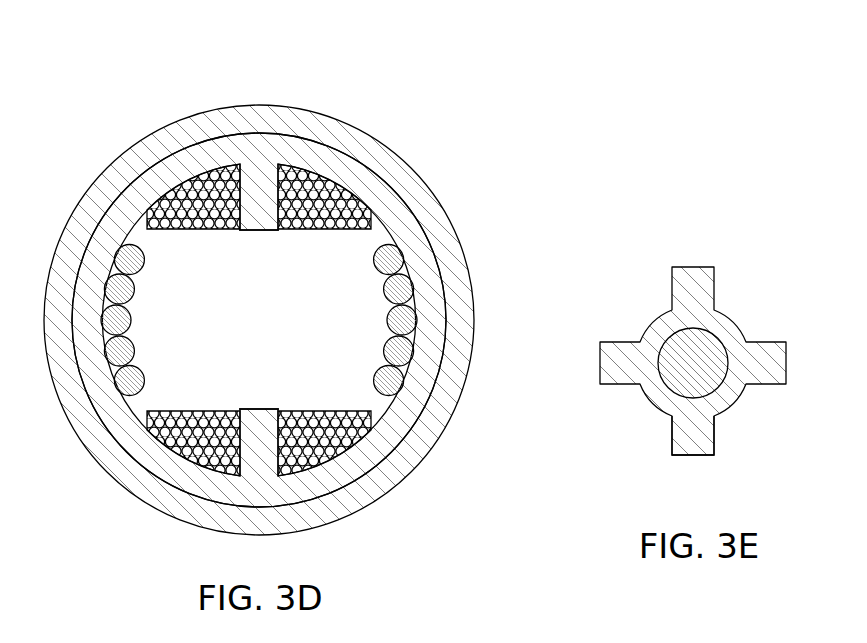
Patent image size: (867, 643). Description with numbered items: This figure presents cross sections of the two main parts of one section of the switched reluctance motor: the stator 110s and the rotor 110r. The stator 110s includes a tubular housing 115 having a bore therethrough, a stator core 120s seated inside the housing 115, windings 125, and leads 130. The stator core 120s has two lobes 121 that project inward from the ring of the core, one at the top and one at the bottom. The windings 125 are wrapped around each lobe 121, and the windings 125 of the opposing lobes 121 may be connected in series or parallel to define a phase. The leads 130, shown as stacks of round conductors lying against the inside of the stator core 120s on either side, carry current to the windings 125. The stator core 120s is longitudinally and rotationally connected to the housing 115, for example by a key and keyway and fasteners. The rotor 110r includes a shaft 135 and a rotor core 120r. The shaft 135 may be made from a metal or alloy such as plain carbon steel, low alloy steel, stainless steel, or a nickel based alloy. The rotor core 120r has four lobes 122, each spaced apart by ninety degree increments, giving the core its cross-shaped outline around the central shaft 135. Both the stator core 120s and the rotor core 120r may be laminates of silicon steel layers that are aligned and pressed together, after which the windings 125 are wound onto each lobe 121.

In FIG. 3D, the stator 110s is at (274, 276).
In FIG. 3D, the housing 115 is at (190, 114).
In FIG. 3D, the core 120s is at (259, 268).
In FIG. 3D, the lobe 121 is at (258, 232).
In FIG. 3D, the windings 125 is at (334, 190).
In FIG. 3D, the leads 130 is at (386, 383).
In FIG. 3E, the rotor 110r is at (689, 285).
In FIG. 3E, the core 120r is at (672, 350).
In FIG. 3E, the lobe 122 is at (692, 455).
In FIG. 3E, the shaft 135 is at (702, 357).